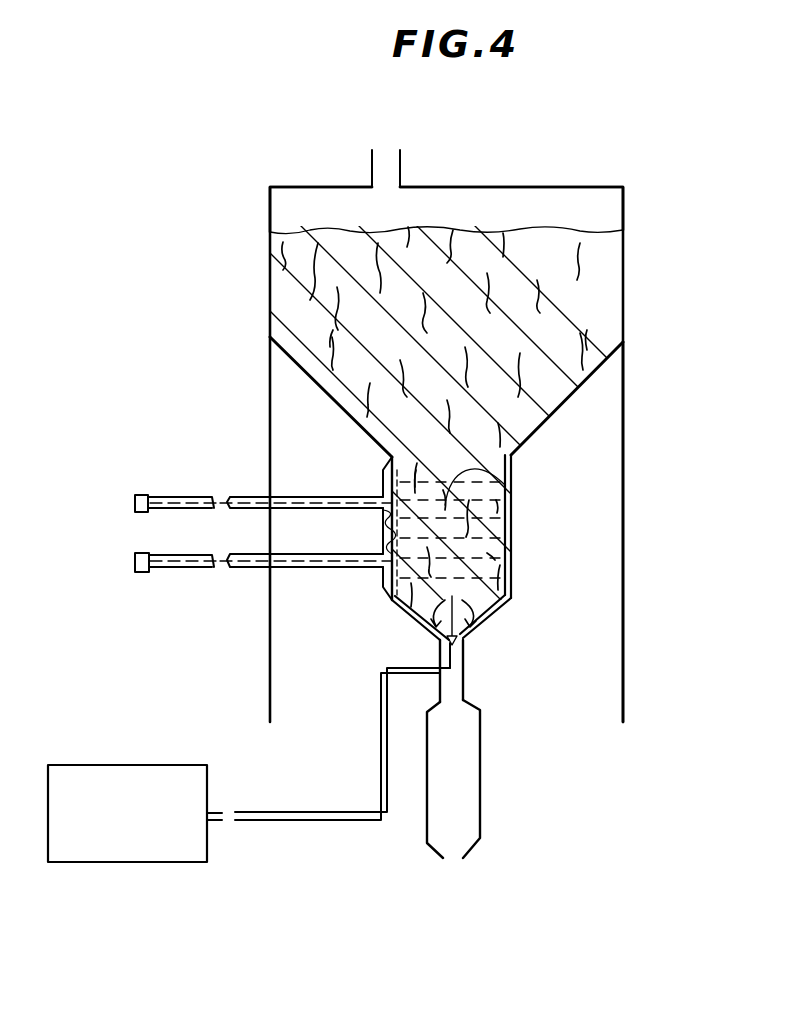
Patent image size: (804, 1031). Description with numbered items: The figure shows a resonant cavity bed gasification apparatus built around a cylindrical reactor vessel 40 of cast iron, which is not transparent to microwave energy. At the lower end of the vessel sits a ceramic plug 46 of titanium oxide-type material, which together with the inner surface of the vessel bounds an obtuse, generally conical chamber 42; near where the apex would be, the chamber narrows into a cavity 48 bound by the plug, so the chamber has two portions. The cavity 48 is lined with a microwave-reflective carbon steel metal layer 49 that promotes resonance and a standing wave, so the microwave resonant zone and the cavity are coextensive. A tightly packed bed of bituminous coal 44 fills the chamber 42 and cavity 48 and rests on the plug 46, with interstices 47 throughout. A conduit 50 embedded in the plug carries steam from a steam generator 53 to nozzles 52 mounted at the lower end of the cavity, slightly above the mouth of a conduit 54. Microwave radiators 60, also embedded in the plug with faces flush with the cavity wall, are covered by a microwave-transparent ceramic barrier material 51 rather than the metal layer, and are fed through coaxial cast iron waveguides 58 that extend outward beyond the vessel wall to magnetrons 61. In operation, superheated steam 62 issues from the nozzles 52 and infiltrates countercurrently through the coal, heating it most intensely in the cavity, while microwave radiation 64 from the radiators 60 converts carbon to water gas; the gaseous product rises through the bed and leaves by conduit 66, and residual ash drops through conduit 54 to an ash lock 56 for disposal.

The cylindrical reactor vessel 40 is at (625, 496).
The conical chamber 42 is at (610, 209).
The bed of bituminous coal 44 is at (592, 306).
The ceramic plug 46 is at (615, 441).
The interstices 47 is at (326, 332).
The cavity 48 is at (510, 477).
The metal layer 49 is at (497, 618).
The conduit 50 is at (381, 776).
The ceramic barrier material 51 is at (393, 541).
The nozzles 52 is at (468, 641).
The steam generator 53 is at (140, 857).
The conduit 54 is at (455, 688).
The ash lock 56 is at (480, 773).
The waveguides 58 is at (233, 495).
The microwave radiators 60 is at (383, 471).
The magnetrons 61 is at (133, 497).
The steam 62 is at (436, 602).
The microwave radiation 64 is at (493, 552).
The conduit 66 is at (401, 164).